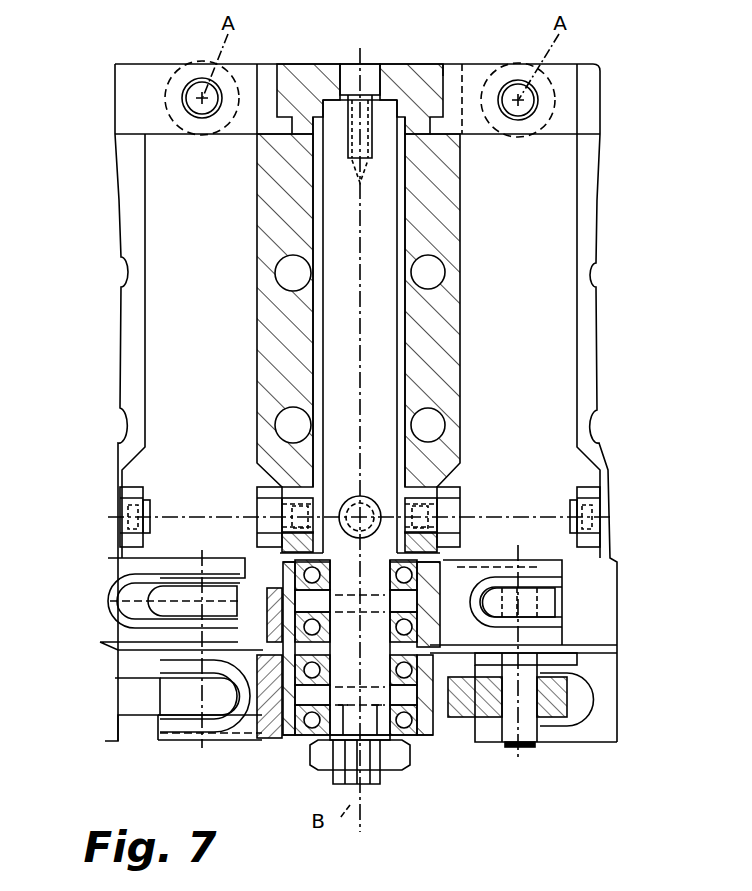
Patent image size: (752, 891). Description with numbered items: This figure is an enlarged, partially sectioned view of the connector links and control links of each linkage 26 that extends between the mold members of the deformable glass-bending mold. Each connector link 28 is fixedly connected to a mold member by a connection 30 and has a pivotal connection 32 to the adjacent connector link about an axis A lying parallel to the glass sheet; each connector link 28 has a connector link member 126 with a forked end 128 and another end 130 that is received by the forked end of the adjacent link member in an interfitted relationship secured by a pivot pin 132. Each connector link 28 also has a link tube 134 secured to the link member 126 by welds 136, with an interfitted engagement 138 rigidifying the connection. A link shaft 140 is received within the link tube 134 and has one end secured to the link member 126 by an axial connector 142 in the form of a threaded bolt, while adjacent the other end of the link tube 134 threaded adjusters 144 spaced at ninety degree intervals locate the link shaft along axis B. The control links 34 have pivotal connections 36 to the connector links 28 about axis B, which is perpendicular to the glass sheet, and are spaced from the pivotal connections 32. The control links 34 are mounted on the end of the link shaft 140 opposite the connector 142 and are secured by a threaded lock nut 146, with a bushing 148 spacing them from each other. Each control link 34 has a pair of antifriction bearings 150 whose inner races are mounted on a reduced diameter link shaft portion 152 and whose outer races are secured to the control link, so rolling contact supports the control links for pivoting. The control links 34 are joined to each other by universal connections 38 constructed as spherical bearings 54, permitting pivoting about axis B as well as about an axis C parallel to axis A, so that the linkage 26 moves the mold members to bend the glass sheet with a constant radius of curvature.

The linkage 26 is at (124, 345).
The connector link 28 is at (450, 77).
The connection 30 is at (290, 288).
The pivotal connection 32 is at (190, 90).
The control link 34 is at (443, 560).
The pivotal connection 36 is at (307, 697).
The universal connection 38 is at (290, 628).
The spherical bearing 54 is at (108, 596).
The connector link member 126 is at (427, 70).
The forked end 128 is at (528, 67).
The end 130 is at (247, 67).
The pivot pin 132 is at (200, 83).
The link tube 134 is at (450, 222).
The weld 136 is at (256, 137).
The interfitted engagement 138 is at (300, 68).
The link shaft 140 is at (340, 223).
The axial connector 142 is at (368, 63).
The threaded adjuster 144 is at (268, 487).
The threaded lock nut 146 is at (318, 772).
The bushing 148 is at (437, 680).
The antifriction bearing 150 is at (290, 568).
The reduced diameter link shaft portion 152 is at (391, 770).